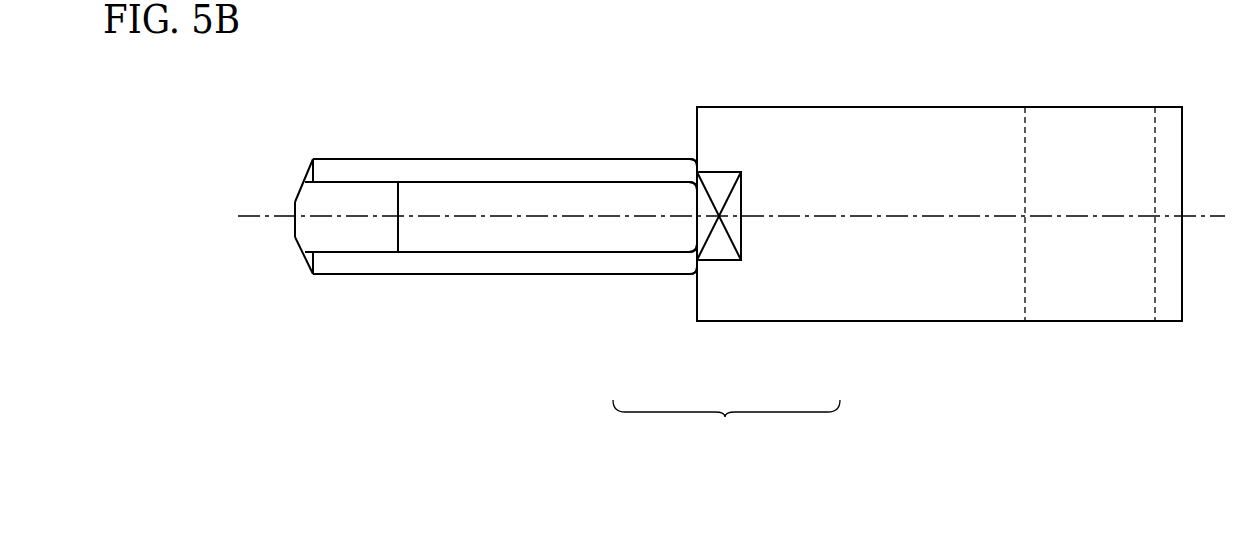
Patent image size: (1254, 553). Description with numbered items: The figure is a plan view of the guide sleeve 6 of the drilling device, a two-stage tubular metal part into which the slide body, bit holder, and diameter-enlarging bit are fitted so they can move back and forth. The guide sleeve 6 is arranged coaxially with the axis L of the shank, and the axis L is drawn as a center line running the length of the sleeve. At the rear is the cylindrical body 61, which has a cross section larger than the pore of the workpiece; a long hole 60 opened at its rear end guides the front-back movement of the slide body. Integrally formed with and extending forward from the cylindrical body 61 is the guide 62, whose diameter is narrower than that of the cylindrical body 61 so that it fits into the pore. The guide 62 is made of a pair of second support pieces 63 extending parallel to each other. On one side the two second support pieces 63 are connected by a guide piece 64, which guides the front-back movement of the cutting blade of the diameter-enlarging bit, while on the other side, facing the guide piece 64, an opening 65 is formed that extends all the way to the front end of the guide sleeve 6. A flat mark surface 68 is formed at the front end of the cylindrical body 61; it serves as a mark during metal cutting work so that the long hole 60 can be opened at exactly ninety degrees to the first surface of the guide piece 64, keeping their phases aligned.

The guide sleeve 6 is at (726, 424).
The long hole 60 is at (1025, 152).
The cylindrical body 61 is at (815, 322).
The guide 62 is at (650, 274).
The second support pieces 63 is at (551, 160).
The guide piece 64 is at (577, 232).
The opening 65 is at (446, 186).
The mark surface 68 is at (722, 182).
The axis L is at (895, 214).